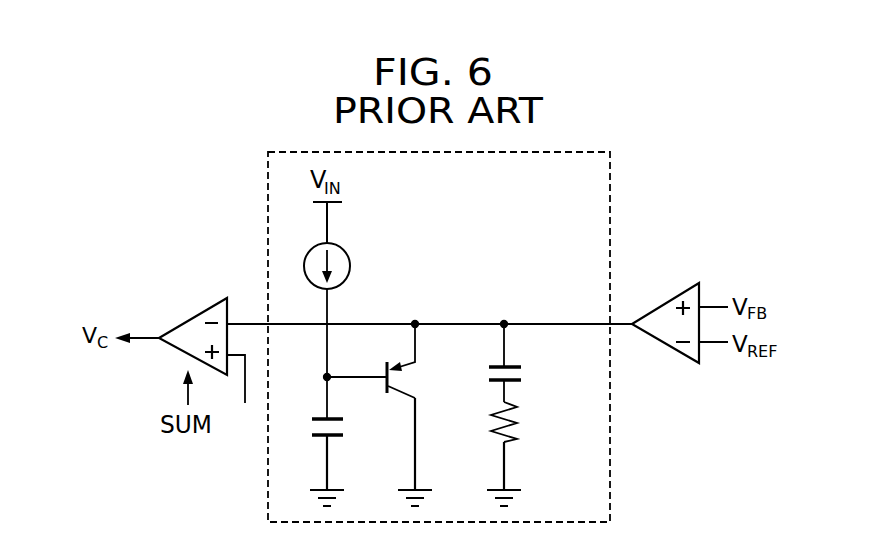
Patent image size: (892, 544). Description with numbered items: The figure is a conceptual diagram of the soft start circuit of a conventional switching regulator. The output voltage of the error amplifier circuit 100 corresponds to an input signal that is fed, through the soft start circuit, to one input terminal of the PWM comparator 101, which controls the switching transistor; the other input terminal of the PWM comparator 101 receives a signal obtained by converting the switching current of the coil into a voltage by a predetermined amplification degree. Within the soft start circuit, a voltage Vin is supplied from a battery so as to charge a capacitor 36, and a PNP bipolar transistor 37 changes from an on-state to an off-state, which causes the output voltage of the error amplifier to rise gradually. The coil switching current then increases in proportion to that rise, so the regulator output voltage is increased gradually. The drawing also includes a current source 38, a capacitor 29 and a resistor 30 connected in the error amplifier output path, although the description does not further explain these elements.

The PWM comparator 101 is at (188, 318).
The error amplifier circuit 100 is at (653, 308).
The current source 38 is at (350, 266).
The PNP bipolar transistor 37 is at (402, 375).
The capacitor 36 is at (352, 427).
The capacitor 29 is at (525, 372).
The resistor 30 is at (525, 435).